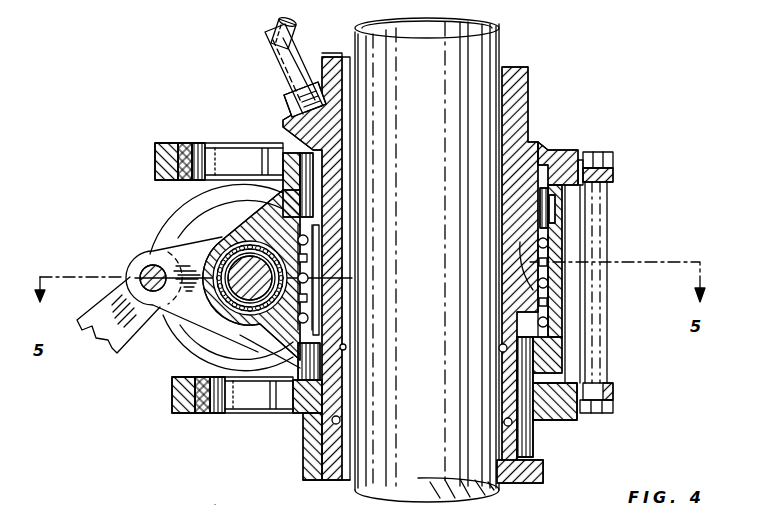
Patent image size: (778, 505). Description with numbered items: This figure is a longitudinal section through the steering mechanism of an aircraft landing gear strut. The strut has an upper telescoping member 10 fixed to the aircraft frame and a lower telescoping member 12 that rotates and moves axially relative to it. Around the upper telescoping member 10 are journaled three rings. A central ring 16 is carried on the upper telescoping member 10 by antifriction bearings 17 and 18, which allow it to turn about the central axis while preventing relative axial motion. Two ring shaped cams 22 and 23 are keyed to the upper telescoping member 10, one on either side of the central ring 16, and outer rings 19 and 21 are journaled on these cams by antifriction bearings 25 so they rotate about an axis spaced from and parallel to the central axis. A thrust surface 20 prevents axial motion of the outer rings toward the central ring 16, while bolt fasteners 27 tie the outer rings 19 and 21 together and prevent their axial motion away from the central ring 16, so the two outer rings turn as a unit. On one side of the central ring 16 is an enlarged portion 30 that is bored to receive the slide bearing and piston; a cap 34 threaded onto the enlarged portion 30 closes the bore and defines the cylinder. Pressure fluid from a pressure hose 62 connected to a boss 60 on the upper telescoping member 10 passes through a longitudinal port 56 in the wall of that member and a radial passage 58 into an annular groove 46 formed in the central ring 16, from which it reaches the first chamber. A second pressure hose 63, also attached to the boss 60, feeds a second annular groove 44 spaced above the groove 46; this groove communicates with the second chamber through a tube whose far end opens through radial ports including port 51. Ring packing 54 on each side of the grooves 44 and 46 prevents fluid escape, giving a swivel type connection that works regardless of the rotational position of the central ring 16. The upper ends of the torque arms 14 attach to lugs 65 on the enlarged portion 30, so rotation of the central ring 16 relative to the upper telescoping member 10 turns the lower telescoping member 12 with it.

The upper telescoping member 10 is at (530, 97).
The lower telescoping member 12 is at (503, 46).
The torque arms 14 is at (128, 327).
The central ring 16 is at (562, 300).
The antifriction bearing 17 is at (556, 208).
The antifriction bearing 18 is at (562, 366).
The outer ring 19 is at (566, 152).
The thrust surface 20 is at (168, 181).
The outer ring 21 is at (560, 421).
The ring shaped cam 22 is at (205, 146).
The ring shaped cam 23 is at (213, 413).
The antifriction bearings 25 is at (166, 144).
The bolt fasteners 27 is at (610, 202).
The enlarged portion 30 is at (212, 248).
The cap 34 is at (215, 504).
The second annular groove 44 is at (276, 266).
The annular groove 46 is at (270, 344).
The radial port 51 is at (326, 459).
The ring packing 54 is at (541, 252).
The port 56 is at (314, 238).
The radial passage 58 is at (318, 304).
The boss 60 is at (284, 118).
The pressure hose 62 is at (264, 82).
The pressure hose 63 is at (297, 42).
The lugs 65 is at (185, 252).